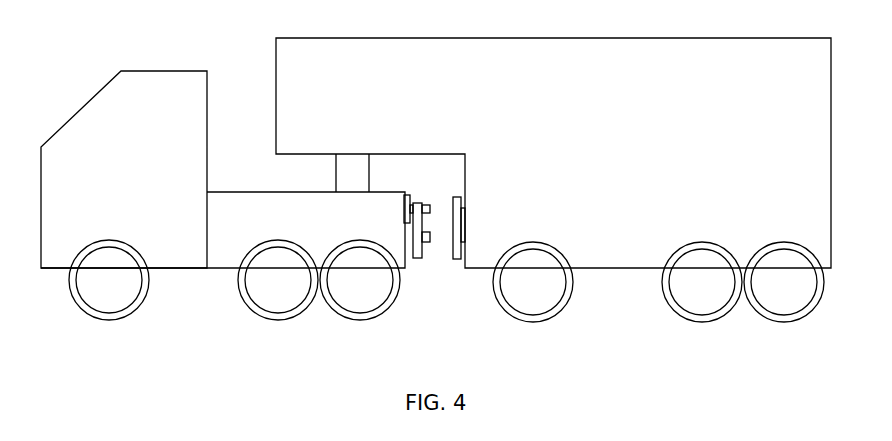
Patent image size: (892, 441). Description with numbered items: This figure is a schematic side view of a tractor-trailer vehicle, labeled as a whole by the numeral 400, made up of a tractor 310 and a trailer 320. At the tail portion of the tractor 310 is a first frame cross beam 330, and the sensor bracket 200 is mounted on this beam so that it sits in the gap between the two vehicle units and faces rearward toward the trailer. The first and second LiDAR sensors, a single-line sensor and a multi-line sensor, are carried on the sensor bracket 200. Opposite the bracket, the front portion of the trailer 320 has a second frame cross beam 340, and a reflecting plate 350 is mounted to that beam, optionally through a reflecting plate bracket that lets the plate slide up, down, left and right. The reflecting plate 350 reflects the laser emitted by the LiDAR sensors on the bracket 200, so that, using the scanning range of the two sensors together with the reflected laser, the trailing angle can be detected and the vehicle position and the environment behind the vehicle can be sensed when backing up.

The tractor-trailer system 400 is at (436, 190).
The tractor 310 is at (127, 88).
The trailer 320 is at (705, 57).
The first frame cross beam 330 is at (408, 195).
The sensor bracket 200 is at (416, 283).
The reflecting plate 350 is at (455, 260).
The second frame cross beam 340 is at (463, 242).